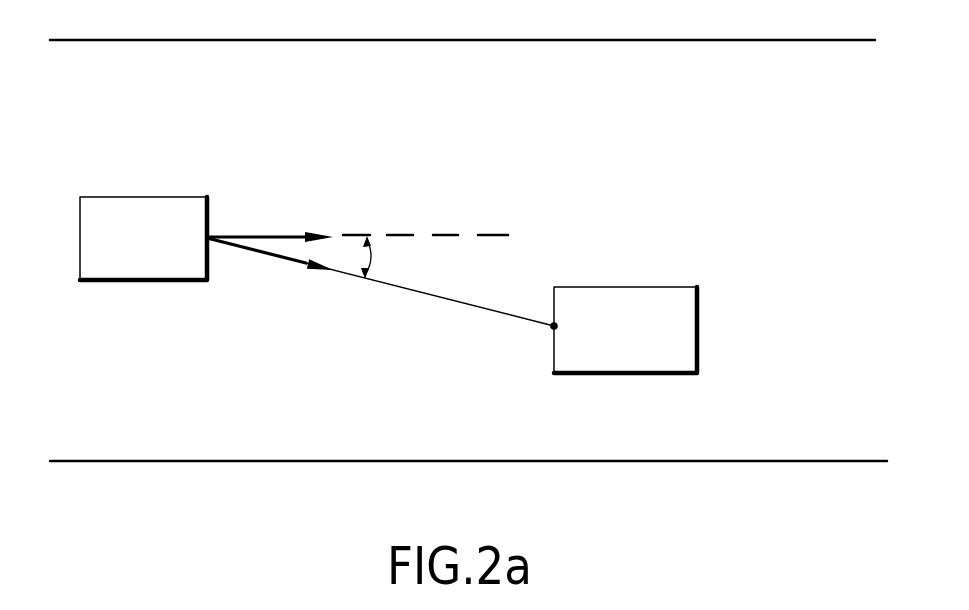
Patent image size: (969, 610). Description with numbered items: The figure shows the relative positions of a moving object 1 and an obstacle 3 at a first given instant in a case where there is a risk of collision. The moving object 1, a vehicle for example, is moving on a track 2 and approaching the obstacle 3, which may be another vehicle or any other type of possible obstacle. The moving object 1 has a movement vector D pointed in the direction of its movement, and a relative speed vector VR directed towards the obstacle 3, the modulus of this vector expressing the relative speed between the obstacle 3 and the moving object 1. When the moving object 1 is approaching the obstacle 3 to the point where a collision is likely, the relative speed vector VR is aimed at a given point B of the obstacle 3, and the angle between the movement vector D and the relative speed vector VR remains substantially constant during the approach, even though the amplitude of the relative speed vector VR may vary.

The moving object 1 is at (147, 197).
The road / lane boundary lines 2 is at (263, 22).
The obstacle 3 is at (662, 287).
The movement vector D is at (273, 230).
The relative speed vector VR is at (273, 257).
The given point of the obstacle B is at (557, 326).